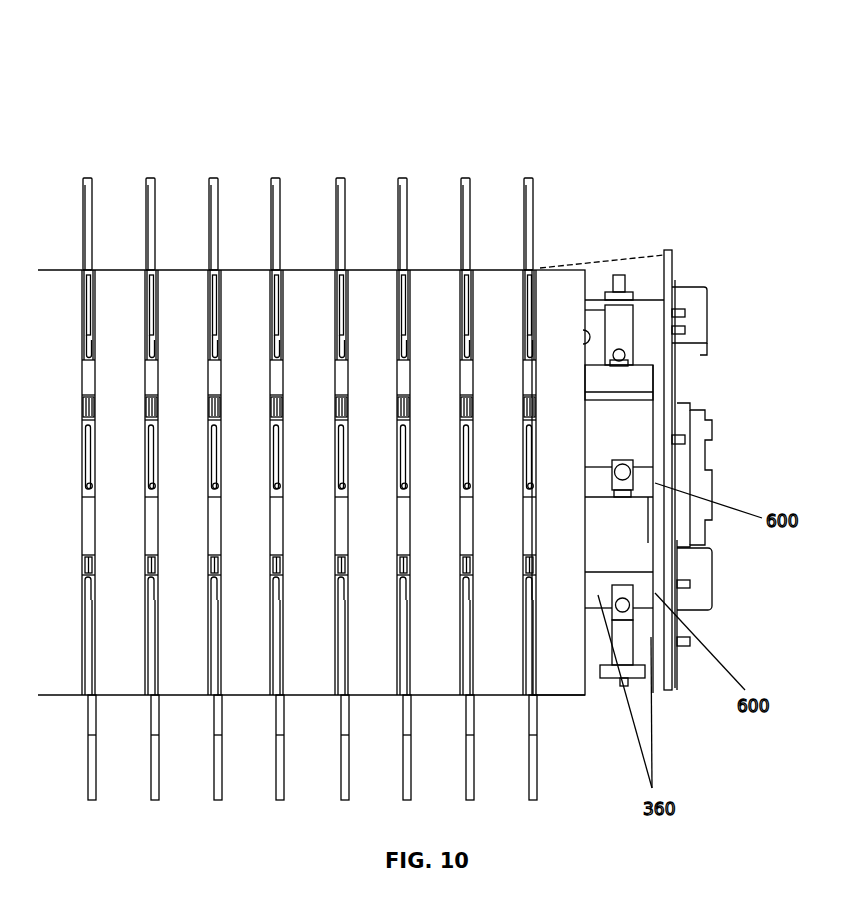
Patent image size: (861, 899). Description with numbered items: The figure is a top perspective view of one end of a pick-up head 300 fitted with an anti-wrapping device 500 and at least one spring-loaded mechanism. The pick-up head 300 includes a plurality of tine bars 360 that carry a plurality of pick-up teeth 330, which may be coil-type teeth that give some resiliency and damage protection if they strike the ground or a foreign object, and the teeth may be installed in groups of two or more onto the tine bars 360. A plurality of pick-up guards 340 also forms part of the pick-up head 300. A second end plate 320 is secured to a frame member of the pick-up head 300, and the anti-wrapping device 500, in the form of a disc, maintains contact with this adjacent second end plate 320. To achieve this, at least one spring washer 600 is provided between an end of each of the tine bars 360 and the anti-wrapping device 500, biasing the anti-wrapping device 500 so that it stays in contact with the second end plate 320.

The pick-up head 300 is at (211, 103).
The second end plate 320 is at (668, 258).
The pick-up teeth 330 is at (339, 178).
The pick-up guards 340 is at (249, 670).
The tine bars 360 is at (592, 380).
The anti-wrapping device 500 is at (663, 448).
The spring washer 600 is at (650, 380).